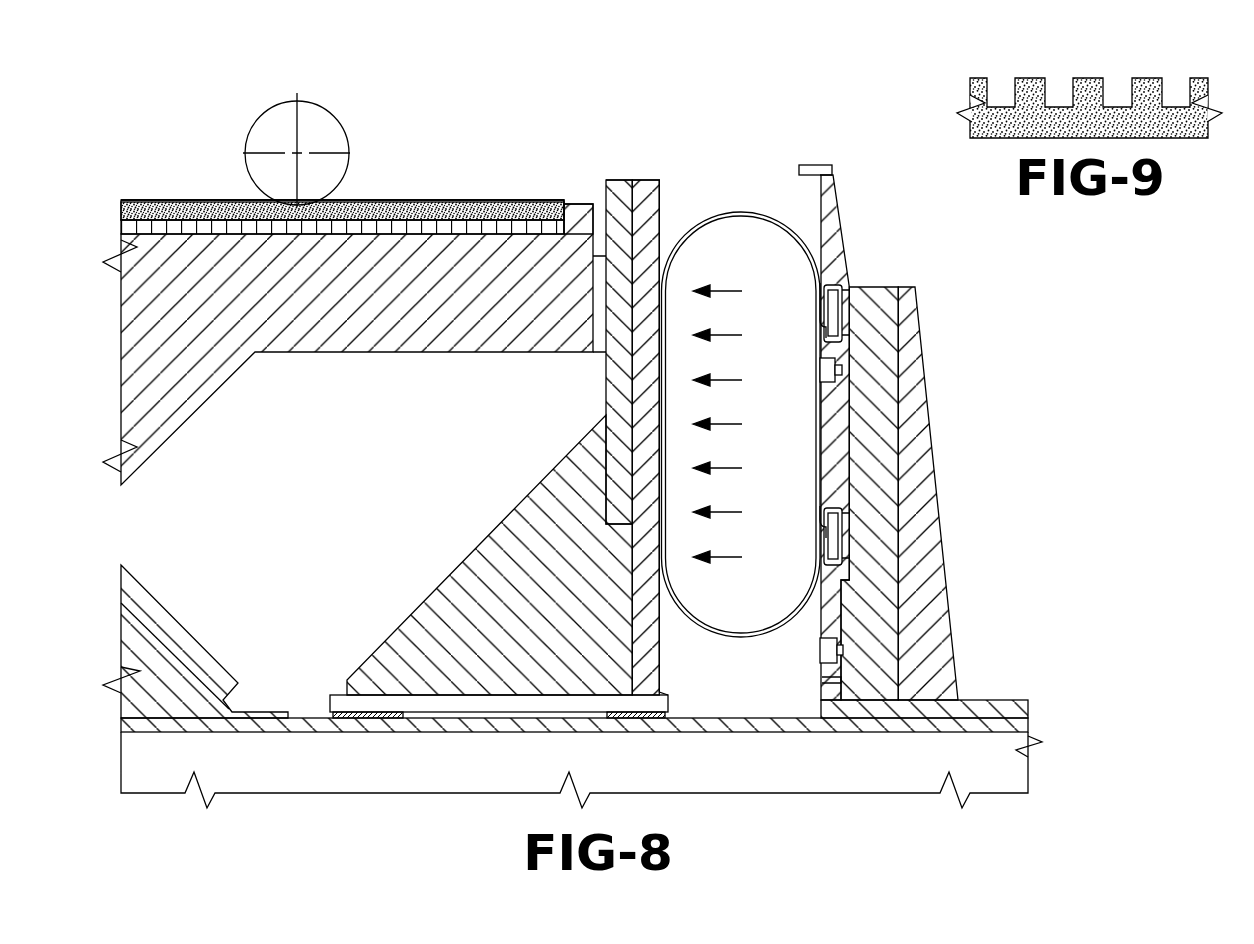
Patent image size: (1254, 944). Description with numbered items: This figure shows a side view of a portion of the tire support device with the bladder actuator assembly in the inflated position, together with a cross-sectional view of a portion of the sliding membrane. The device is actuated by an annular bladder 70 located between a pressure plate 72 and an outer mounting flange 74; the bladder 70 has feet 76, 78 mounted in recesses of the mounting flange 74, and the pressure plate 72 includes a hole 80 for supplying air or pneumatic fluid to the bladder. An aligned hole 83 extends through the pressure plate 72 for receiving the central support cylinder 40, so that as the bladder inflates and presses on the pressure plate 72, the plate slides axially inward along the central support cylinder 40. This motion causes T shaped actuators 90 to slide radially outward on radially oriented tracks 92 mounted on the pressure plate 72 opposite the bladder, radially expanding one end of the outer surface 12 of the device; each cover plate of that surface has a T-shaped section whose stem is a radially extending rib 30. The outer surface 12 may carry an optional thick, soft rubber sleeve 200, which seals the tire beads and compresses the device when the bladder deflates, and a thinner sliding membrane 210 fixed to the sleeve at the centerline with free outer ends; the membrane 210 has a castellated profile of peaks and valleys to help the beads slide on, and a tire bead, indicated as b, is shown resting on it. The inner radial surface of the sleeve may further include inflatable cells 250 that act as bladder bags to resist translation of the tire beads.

In FIG. 8, the outer radially expandable surface 12 is at (176, 198).
In FIG. 8, the radially extending rib 30 is at (311, 308).
In FIG. 8, the central support cylinder 40 is at (268, 712).
In FIG. 8, the annular bladder 70 is at (752, 213).
In FIG. 8, the pressure plate 72 is at (664, 188).
In FIG. 8, the outer mounting flange 74 is at (838, 192).
In FIG. 8, the feet 76 is at (824, 298).
In FIG. 8, the feet 78 is at (842, 312).
In FIG. 8, the hole 80 is at (822, 370).
In FIG. 8, the aligned hole 83 is at (672, 728).
In FIG. 8, the T shaped actuator 90 is at (569, 212).
In FIG. 8, the radially oriented track 92 is at (621, 190).
In FIG. 8, the rubber sleeve 200 is at (490, 208).
In FIG. 8, the sliding membrane 210 is at (365, 202).
In FIG. 9, the sliding membrane 210 is at (976, 74).
In FIG. 8, the cells 250 is at (192, 232).
In FIG. 8, the ball b is at (318, 108).